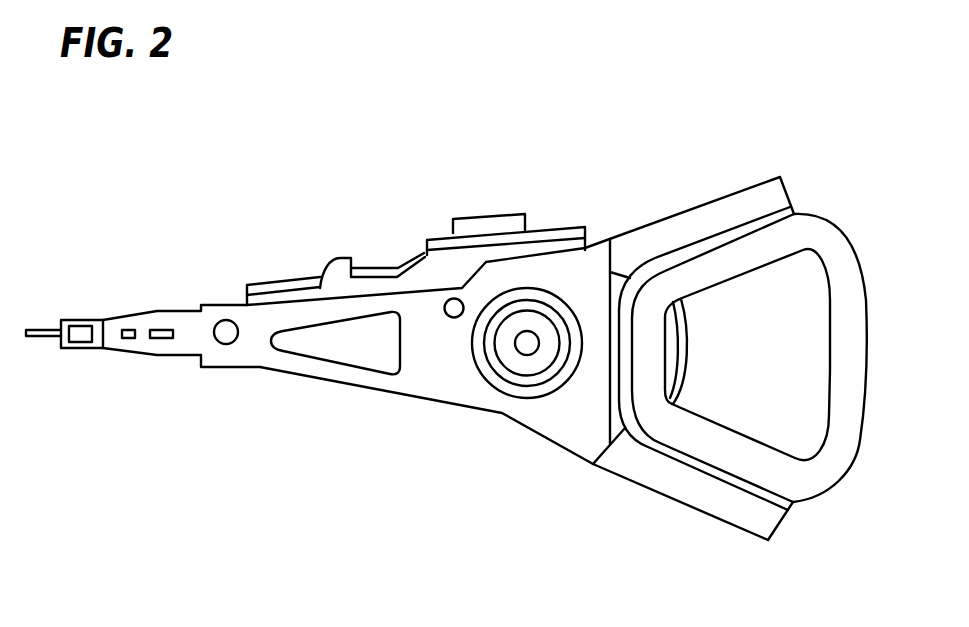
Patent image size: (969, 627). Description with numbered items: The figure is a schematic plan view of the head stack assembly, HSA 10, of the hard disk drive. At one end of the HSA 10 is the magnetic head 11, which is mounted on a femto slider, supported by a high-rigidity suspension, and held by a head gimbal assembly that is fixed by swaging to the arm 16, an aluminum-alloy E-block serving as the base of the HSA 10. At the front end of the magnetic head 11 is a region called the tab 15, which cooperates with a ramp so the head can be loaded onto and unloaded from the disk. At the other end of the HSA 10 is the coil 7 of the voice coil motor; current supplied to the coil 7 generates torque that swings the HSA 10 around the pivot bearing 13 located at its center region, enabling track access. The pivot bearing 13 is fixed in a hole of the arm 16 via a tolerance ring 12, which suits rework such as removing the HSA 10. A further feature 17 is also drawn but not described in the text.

The coil 7 is at (710, 268).
The HSA 10 is at (385, 413).
The magnetic head 11 is at (82, 326).
The tolerance ring 12 is at (498, 303).
The pivot bearing 13 is at (527, 363).
The tab 15 is at (47, 330).
The arm 16 is at (427, 270).
The slot 17 is at (163, 330).